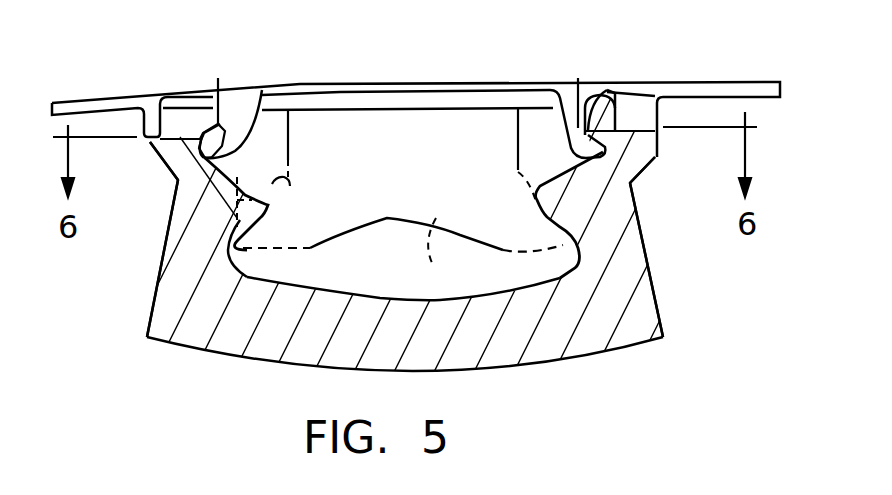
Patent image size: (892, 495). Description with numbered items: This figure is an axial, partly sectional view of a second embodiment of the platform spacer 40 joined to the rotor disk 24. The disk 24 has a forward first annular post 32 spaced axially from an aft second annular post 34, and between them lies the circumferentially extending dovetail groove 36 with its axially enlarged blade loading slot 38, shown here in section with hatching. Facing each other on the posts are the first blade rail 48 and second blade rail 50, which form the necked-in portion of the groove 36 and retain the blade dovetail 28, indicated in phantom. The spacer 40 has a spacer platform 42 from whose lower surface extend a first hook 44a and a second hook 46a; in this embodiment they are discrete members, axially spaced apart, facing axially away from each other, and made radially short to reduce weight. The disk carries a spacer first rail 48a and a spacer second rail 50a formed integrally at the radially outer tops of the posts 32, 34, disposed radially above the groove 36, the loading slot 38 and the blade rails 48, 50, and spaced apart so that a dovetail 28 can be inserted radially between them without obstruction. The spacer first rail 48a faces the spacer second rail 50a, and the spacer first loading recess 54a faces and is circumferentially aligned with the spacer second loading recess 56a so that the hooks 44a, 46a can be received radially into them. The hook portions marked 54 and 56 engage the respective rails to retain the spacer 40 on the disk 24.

The rotor disk 24 is at (136, 334).
The blade dovetail 28 is at (434, 264).
The first annular post 32 is at (170, 212).
The second annular post 34 is at (636, 208).
The dovetail groove 36 is at (320, 288).
The blade loading slot 38 is at (243, 258).
The spacer 40 is at (542, 70).
The spacer platform 42 is at (323, 80).
The first hook 44a is at (282, 148).
The second hook 46a is at (560, 130).
The first blade rail 48 is at (283, 179).
The spacer first rail 48a is at (218, 78).
The second blade rail 50 is at (518, 170).
The spacer second rail 50a is at (578, 78).
The left base hook 54 is at (277, 217).
The spacer first loading recess 54a is at (170, 172).
The right base hook 56 is at (538, 231).
The spacer second loading recess 56a is at (661, 160).